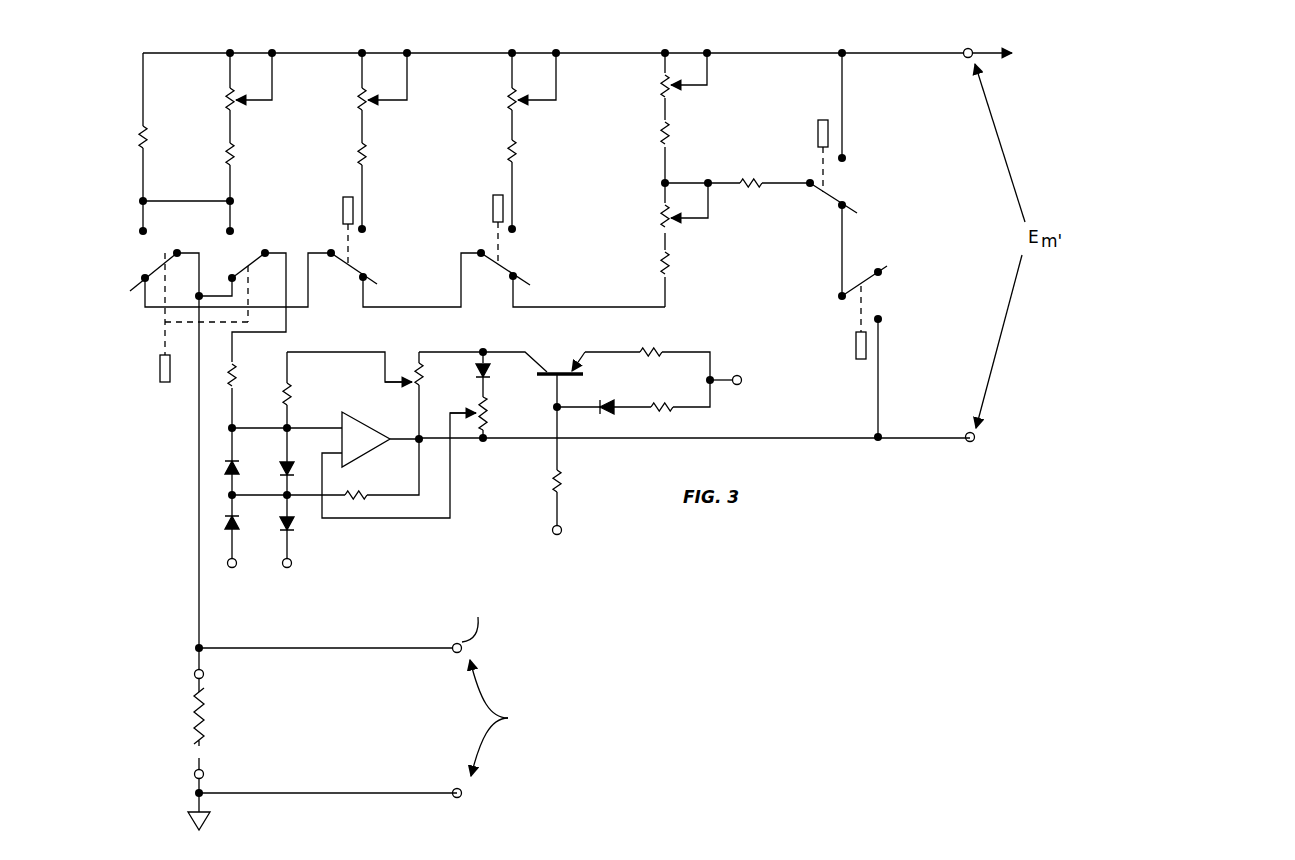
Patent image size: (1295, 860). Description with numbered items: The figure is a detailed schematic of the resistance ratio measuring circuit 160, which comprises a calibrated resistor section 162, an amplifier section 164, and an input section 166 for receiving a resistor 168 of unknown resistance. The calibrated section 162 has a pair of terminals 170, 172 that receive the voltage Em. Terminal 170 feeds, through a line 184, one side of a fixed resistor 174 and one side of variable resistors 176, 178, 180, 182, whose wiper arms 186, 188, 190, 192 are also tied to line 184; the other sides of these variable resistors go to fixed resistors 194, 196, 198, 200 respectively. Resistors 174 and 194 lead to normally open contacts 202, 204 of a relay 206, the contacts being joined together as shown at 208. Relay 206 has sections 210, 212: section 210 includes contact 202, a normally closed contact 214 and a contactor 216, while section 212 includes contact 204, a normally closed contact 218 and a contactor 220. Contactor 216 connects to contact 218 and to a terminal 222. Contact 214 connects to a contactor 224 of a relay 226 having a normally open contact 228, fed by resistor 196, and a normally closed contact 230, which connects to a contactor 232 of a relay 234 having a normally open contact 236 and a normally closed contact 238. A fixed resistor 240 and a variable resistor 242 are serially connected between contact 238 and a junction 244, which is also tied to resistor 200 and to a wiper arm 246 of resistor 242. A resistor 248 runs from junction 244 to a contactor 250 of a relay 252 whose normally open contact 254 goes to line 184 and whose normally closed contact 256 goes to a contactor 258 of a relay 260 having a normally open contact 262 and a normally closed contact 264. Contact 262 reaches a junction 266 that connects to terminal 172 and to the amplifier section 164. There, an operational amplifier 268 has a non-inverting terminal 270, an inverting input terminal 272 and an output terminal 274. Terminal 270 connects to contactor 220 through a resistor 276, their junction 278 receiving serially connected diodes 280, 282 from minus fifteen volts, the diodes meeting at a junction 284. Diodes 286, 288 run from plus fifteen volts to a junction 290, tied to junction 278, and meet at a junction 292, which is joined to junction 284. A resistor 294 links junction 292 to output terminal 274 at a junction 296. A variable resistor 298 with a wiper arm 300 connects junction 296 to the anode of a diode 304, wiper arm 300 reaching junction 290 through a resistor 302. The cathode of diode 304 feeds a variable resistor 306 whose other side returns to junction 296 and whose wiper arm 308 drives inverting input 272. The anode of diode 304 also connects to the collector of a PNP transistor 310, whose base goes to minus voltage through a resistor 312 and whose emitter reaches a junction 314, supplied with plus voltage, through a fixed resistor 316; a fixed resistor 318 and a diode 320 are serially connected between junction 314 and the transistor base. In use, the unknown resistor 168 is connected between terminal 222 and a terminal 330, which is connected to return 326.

The resistance ratio measuring circuit 160 is at (122, 240).
The calibrated resistor section 162 is at (881, 170).
The amplifier section 164 is at (601, 523).
The input section 166 is at (341, 729).
The resistor having unknown resistance 168 is at (210, 725).
The terminal 170 is at (966, 47).
The terminal 172 is at (971, 443).
The fixed resistor 174 is at (148, 136).
The variable resistor 176 is at (227, 99).
The variable resistor 178 is at (359, 98).
The variable resistor 180 is at (509, 98).
The variable resistor 182 is at (661, 86).
The line 184 is at (800, 52).
The wiper arm 186 is at (261, 101).
The wiper arm 188 is at (396, 101).
The wiper arm 190 is at (549, 101).
The wiper arm 192 is at (699, 86).
The fixed resistor 194 is at (237, 157).
The fixed resistor 196 is at (368, 157).
The fixed resistor 198 is at (516, 157).
The fixed resistor 200 is at (669, 133).
The normally open contact 202 is at (147, 230).
The normally open contact 204 is at (234, 230).
The relay 206 is at (160, 373).
The connection of contacts 208 is at (194, 197).
The relay section 210 is at (119, 264).
The relay section 212 is at (279, 238).
The normally closed contact 214 is at (143, 282).
The contactor 216 is at (178, 252).
The normally closed contact 218 is at (230, 277).
The contactor 220 is at (266, 258).
The terminal 222 is at (194, 673).
The contactor 224 is at (331, 258).
The relay 226 is at (348, 196).
The normally open contact 228 is at (366, 230).
The normally closed contact 230 is at (367, 280).
The contactor 232 is at (481, 258).
The relay 234 is at (498, 194).
The normally open contact 236 is at (516, 230).
The normally closed contact 238 is at (518, 280).
The fixed resistor 240 is at (670, 266).
The variable resistor 242 is at (661, 218).
The junction 244 is at (663, 182).
The wiper arm 246 is at (703, 222).
The resistor 248 is at (756, 176).
The contactor 250 is at (810, 190).
The relay 252 is at (823, 119).
The normally open contact 254 is at (845, 156).
The normally closed contact 256 is at (845, 209).
The contactor 258 is at (868, 283).
The relay 260 is at (855, 350).
The normally open contact 262 is at (882, 320).
The normally closed contact 264 is at (882, 270).
The junction 266 is at (880, 434).
The operational amplifier 268 is at (368, 432).
The non-inverting terminal 270 is at (340, 426).
The inverting input terminal 272 is at (340, 455).
The output terminal 274 is at (416, 443).
The resistor 276 is at (237, 368).
The junction 278 is at (235, 426).
The diode 280 is at (241, 465).
The diode 282 is at (236, 526).
The junction 284 is at (230, 495).
The diode 286 is at (279, 470).
The diode 288 is at (278, 522).
The junction 290 is at (290, 425).
The junction 292 is at (292, 498).
The resistor 294 is at (365, 500).
The junction 296 is at (452, 458).
The variable resistor 298 is at (422, 385).
The wiper arm 300 is at (395, 380).
The resistor 302 is at (284, 394).
The diode 304 is at (485, 378).
The variable resistor 306 is at (487, 417).
The wiper arm 308 is at (468, 412).
The transistor 310 is at (574, 367).
The resistor 312 is at (563, 484).
The junction 314 is at (706, 380).
The fixed resistor 316 is at (648, 350).
The fixed resistor 318 is at (661, 412).
The diode 320 is at (614, 411).
The return 326 is at (187, 818).
The terminal 330 is at (203, 791).